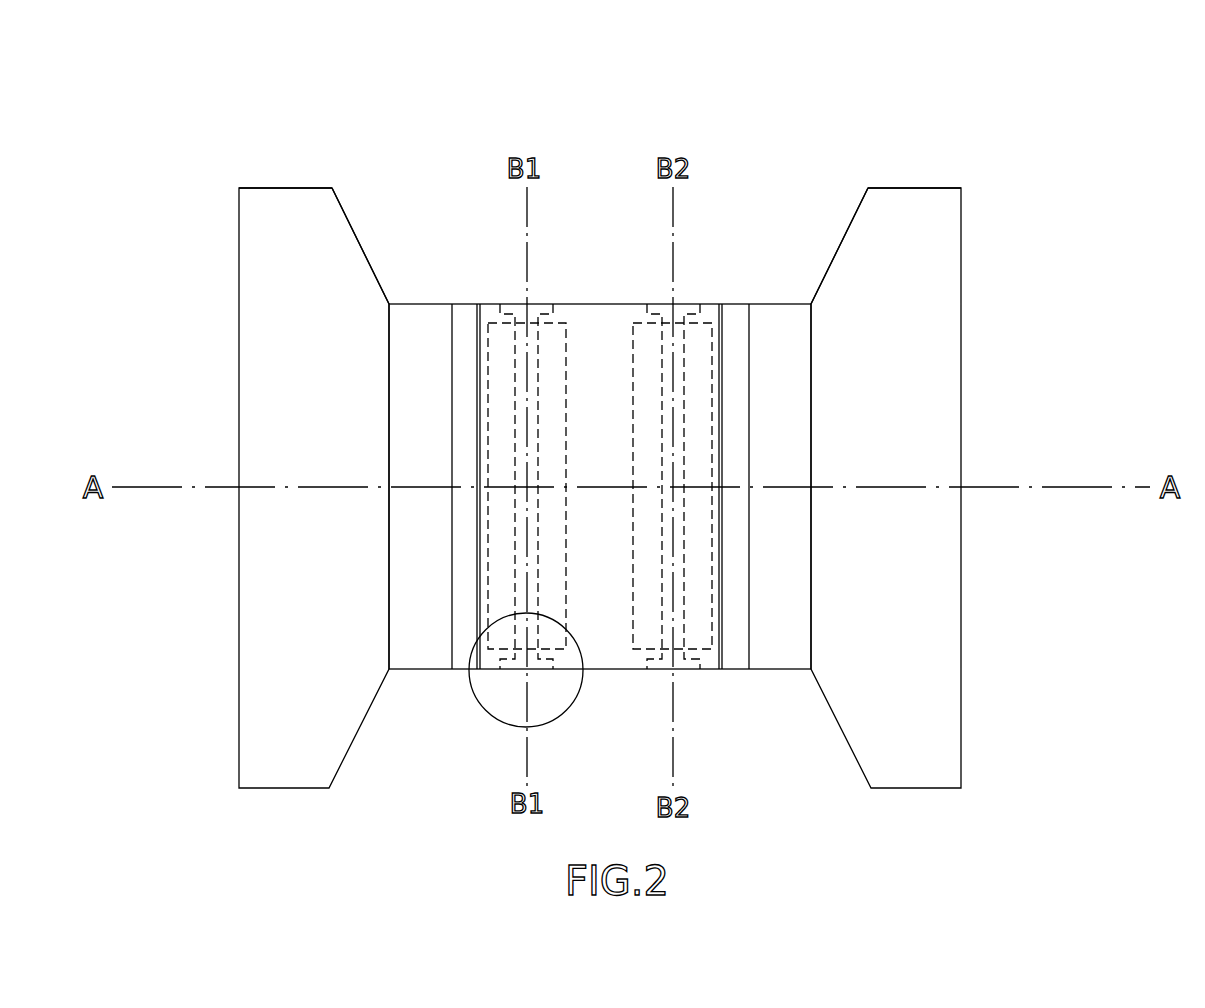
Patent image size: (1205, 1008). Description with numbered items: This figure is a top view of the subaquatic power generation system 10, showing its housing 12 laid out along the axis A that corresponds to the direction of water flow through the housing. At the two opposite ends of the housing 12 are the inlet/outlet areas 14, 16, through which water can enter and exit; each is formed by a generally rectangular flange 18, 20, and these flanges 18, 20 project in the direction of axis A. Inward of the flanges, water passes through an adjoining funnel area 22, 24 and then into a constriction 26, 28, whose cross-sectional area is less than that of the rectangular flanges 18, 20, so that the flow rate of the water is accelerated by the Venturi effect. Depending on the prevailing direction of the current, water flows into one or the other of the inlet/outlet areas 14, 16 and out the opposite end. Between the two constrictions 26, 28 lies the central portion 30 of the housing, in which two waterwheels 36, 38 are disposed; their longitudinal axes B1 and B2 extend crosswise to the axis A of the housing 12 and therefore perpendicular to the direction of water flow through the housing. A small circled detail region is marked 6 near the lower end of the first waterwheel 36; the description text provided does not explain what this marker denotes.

The detail circle 6 is at (482, 705).
The subaquatic power generation system 10 is at (798, 93).
The housing 12 is at (490, 237).
The inlet/outlet area 14 is at (220, 305).
The inlet/outlet area 16 is at (1005, 315).
The rectangular flange 18 is at (293, 188).
The rectangular flange 20 is at (918, 188).
The funnel area 22 is at (353, 225).
The funnel area 24 is at (845, 235).
The constriction 26 is at (420, 304).
The constriction 28 is at (775, 303).
The central portion 30 is at (578, 303).
The waterwheel 36 is at (507, 543).
The waterwheel 38 is at (697, 627).